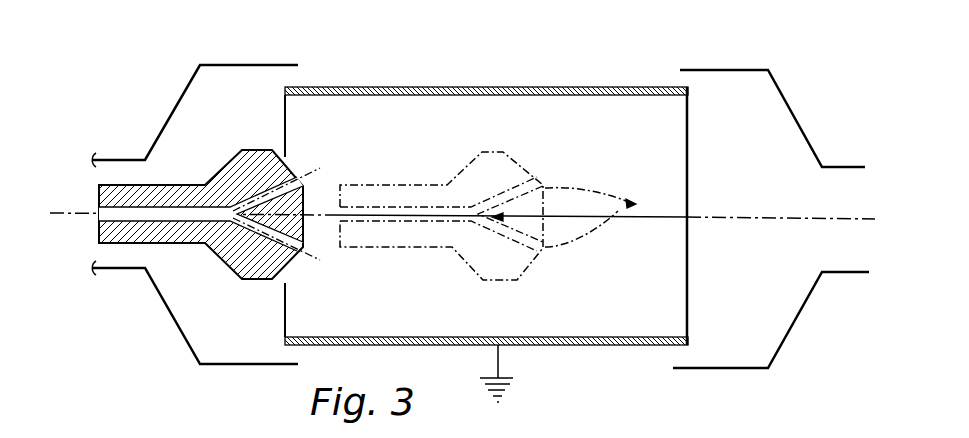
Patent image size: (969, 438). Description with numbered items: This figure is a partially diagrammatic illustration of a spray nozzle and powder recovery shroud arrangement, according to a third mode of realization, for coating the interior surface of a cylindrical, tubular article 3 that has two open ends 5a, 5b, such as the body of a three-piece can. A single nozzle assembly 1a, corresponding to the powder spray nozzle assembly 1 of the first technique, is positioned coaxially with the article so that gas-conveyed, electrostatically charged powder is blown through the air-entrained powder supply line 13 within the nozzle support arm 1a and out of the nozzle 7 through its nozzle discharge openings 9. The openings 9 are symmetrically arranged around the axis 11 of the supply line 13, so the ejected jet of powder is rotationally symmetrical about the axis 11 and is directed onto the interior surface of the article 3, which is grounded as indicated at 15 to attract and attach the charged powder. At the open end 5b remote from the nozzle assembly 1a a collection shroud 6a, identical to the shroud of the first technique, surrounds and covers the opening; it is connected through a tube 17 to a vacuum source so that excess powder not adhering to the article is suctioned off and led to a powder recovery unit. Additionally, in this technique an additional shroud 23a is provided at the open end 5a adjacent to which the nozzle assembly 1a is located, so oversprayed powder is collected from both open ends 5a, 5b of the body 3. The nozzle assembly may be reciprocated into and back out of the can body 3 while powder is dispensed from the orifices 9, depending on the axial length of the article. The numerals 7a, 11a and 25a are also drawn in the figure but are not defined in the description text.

The powder spray nozzle assembly 1 is at (376, 219).
The nozzle support arm 1a is at (168, 186).
The tubular cylindrical target article 3 is at (522, 187).
The open end 5a is at (297, 112).
The open end 5b is at (688, 328).
The collection shroud 6a is at (779, 83).
The nozzle 7 is at (513, 160).
The chamber wall opening 7a is at (284, 160).
The nozzle discharge openings 9 is at (307, 185).
The axis 11 is at (60, 212).
The trajectory axis 11a is at (640, 219).
The air-entrained powder supply line 13 is at (128, 207).
The ground 15 is at (513, 384).
The tube 17 is at (843, 167).
The additional shroud 23a is at (221, 62).
The lower left electrode plate 25a is at (218, 366).